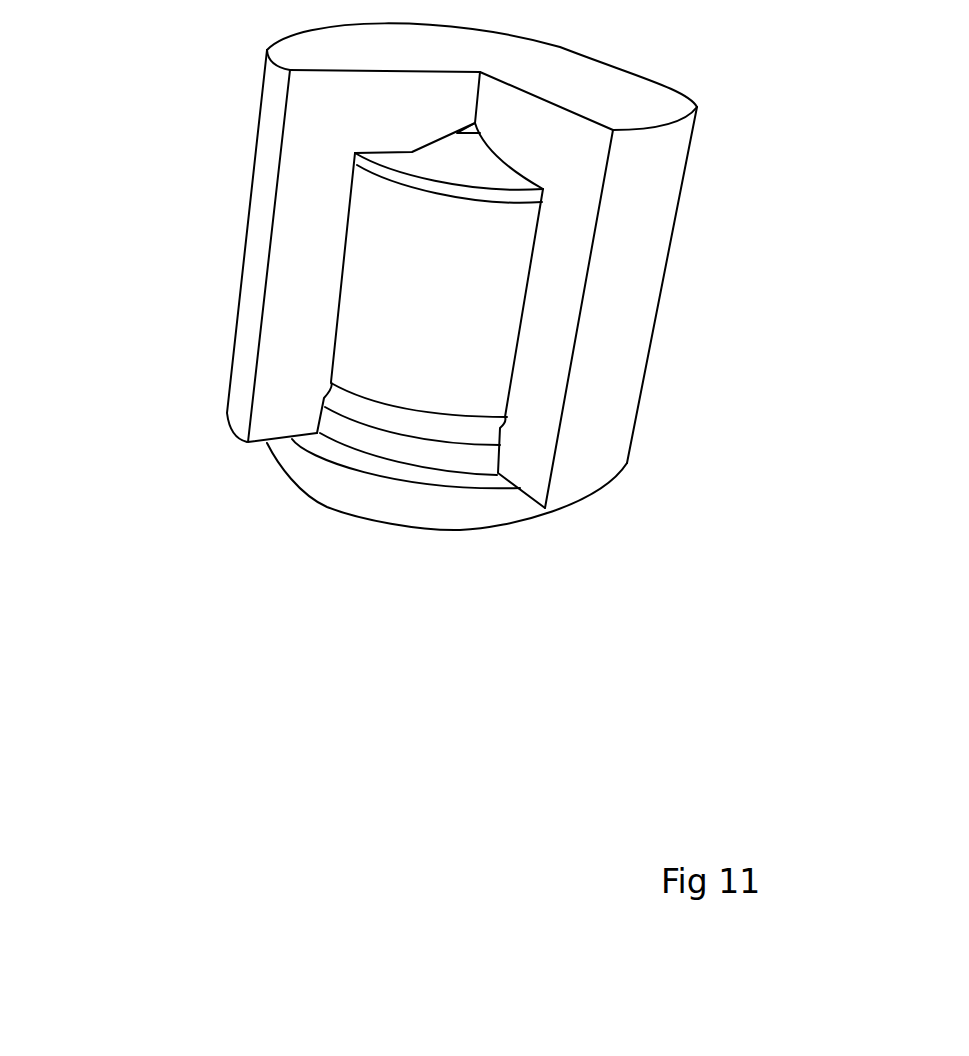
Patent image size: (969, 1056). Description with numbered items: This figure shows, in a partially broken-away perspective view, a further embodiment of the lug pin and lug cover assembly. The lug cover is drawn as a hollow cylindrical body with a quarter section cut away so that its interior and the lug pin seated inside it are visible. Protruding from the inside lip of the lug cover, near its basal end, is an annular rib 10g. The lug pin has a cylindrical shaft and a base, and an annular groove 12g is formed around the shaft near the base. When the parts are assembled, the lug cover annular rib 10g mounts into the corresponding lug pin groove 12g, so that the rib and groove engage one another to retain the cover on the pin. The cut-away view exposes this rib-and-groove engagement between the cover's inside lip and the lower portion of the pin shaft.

The annular rib 10g is at (329, 394).
The annular groove 12g is at (457, 445).